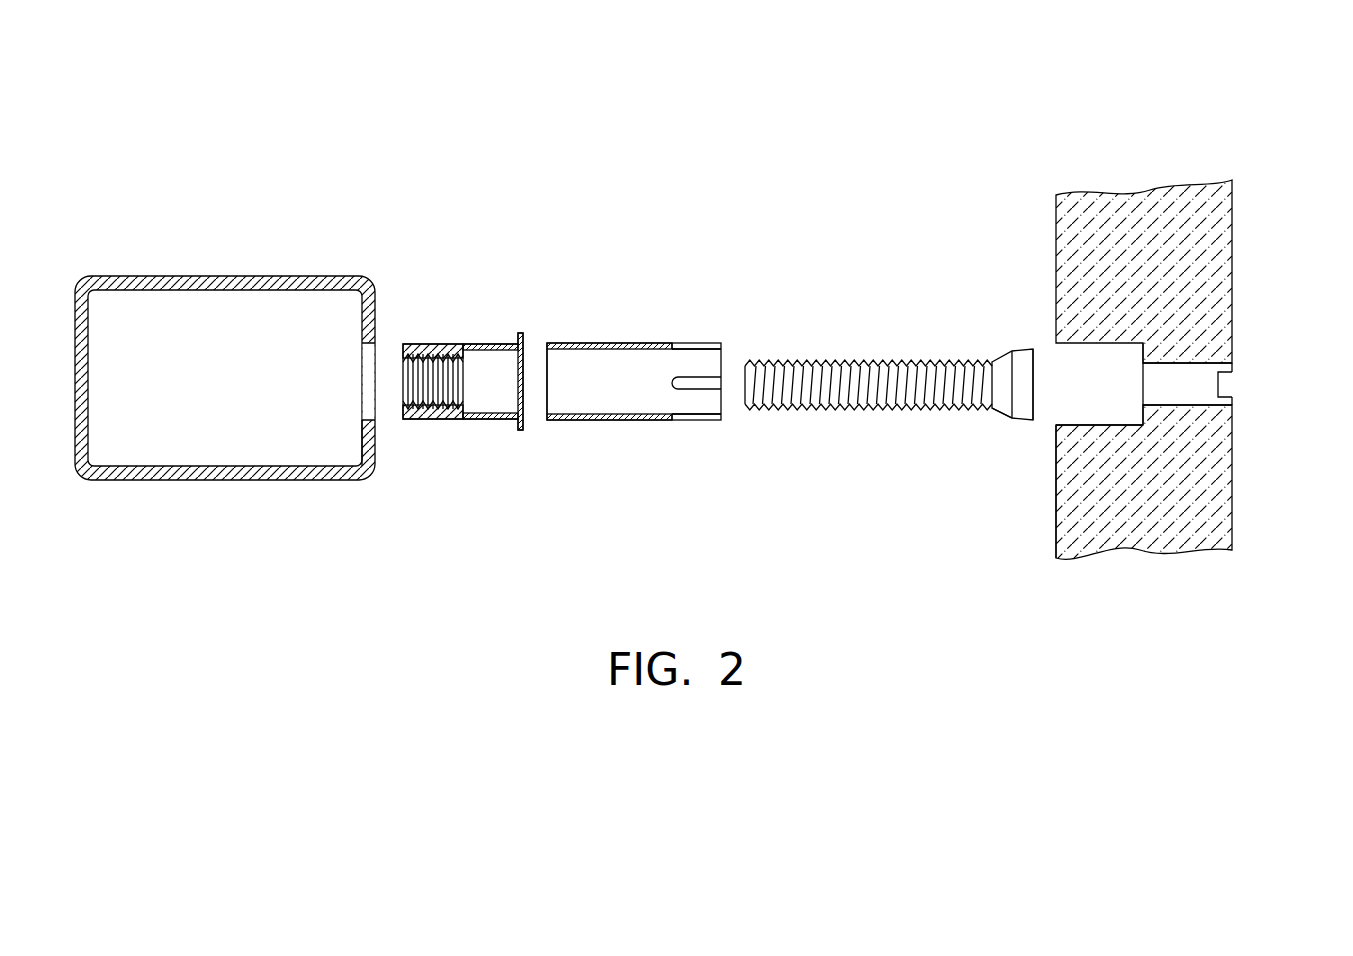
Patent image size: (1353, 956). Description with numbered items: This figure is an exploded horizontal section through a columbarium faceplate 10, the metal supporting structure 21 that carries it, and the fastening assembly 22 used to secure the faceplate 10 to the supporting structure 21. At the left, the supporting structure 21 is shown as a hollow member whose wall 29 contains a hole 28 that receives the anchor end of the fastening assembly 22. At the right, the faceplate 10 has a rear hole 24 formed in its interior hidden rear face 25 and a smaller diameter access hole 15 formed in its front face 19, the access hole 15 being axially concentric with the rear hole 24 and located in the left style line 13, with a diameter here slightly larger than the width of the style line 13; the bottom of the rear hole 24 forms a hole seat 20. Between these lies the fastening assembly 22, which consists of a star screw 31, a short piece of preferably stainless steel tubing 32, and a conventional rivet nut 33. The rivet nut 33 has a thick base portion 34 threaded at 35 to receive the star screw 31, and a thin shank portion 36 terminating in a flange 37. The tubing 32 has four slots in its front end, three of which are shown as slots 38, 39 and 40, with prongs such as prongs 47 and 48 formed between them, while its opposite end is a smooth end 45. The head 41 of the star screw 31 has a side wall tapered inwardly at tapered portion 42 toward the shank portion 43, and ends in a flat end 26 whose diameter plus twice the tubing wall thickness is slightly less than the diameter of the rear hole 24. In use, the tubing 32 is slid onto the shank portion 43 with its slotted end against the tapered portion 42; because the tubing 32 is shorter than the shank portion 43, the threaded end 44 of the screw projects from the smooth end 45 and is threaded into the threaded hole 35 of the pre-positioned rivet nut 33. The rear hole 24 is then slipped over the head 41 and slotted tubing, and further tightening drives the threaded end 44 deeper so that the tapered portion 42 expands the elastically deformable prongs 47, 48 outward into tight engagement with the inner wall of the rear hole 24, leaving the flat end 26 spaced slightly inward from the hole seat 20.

The faceplate 10 is at (1266, 181).
The left style line 13 is at (1232, 385).
The access hole 15 is at (1183, 390).
The front face 19 is at (1232, 255).
The hole seat 20 is at (1143, 350).
The supporting structure 21 is at (246, 276).
The fastening assembly 22 is at (403, 207).
The rear hole 24 is at (1103, 403).
The rear face 25 is at (1056, 520).
The flat end 26 is at (1043, 408).
The hole 28 is at (368, 360).
The wall 29 is at (368, 435).
The star screw 31 is at (894, 372).
The tubing 32 is at (605, 343).
The rivet nut 33 is at (468, 343).
The thick base portion 34 is at (437, 419).
The threaded hole 35 is at (422, 343).
The thin shank portion 36 is at (494, 419).
The flange 37 is at (518, 333).
The slot 38 is at (718, 383).
The slot 39 is at (700, 348).
The slot 40 is at (706, 420).
The head 41 is at (1022, 365).
The tapered portion 42 is at (1012, 416).
The shank portion 43 is at (835, 408).
The threaded end 44 is at (745, 410).
The smooth end 45 is at (547, 397).
The prong 47 is at (688, 362).
The prong 48 is at (690, 403).